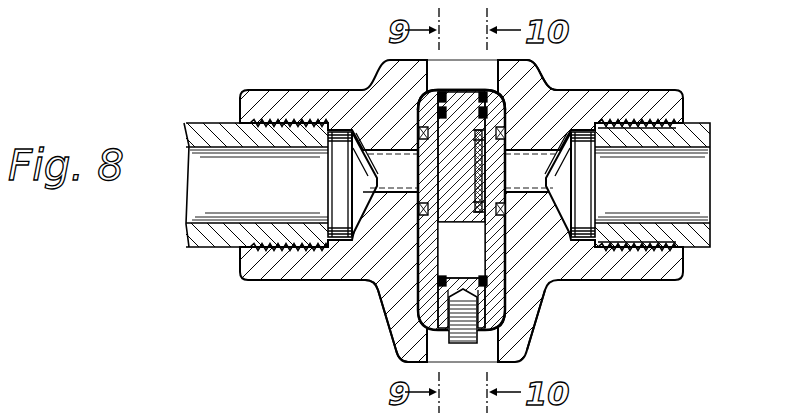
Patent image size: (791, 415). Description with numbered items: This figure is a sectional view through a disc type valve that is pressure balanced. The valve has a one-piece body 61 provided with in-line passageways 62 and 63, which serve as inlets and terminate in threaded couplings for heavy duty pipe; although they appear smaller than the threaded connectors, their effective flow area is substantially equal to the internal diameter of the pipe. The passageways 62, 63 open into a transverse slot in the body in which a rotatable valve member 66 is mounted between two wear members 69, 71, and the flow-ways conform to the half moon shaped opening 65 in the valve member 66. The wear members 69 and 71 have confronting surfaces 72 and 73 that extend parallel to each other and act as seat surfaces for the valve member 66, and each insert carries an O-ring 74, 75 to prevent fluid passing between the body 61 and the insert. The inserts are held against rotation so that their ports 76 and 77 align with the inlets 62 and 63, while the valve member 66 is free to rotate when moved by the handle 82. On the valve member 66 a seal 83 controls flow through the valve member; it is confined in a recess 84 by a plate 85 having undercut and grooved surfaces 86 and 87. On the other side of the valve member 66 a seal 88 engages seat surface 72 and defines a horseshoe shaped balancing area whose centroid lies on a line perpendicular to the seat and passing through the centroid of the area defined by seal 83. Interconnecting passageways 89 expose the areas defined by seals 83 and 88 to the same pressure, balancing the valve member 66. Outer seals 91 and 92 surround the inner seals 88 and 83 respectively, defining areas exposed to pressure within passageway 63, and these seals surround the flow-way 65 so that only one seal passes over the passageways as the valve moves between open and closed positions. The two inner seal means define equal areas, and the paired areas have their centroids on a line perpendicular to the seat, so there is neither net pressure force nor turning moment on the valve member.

The one-piece body 61 is at (556, 84).
The passageway 62 is at (558, 164).
The passageway 63 is at (382, 188).
The half moon shaped opening 65 is at (498, 268).
The valve member 66 is at (463, 97).
The wear member 69 is at (394, 343).
The wear member 71 is at (508, 275).
The confronting surface 72 is at (378, 297).
The confronting surface 73 is at (505, 249).
The O-ring 74 is at (372, 202).
The O-ring 75 is at (512, 133).
The port 76 is at (420, 182).
The port 77 is at (483, 172).
The handle 82 is at (455, 344).
The seal 83 is at (507, 110).
The recess 84 is at (488, 195).
The plate 85 is at (492, 153).
The undercut surface 86 is at (461, 250).
The grooved surface 87 is at (461, 157).
The seal 88 is at (410, 113).
The interconnecting passageway 89 is at (404, 237).
The outer seal 91 is at (447, 92).
The outer seal 92 is at (540, 70).